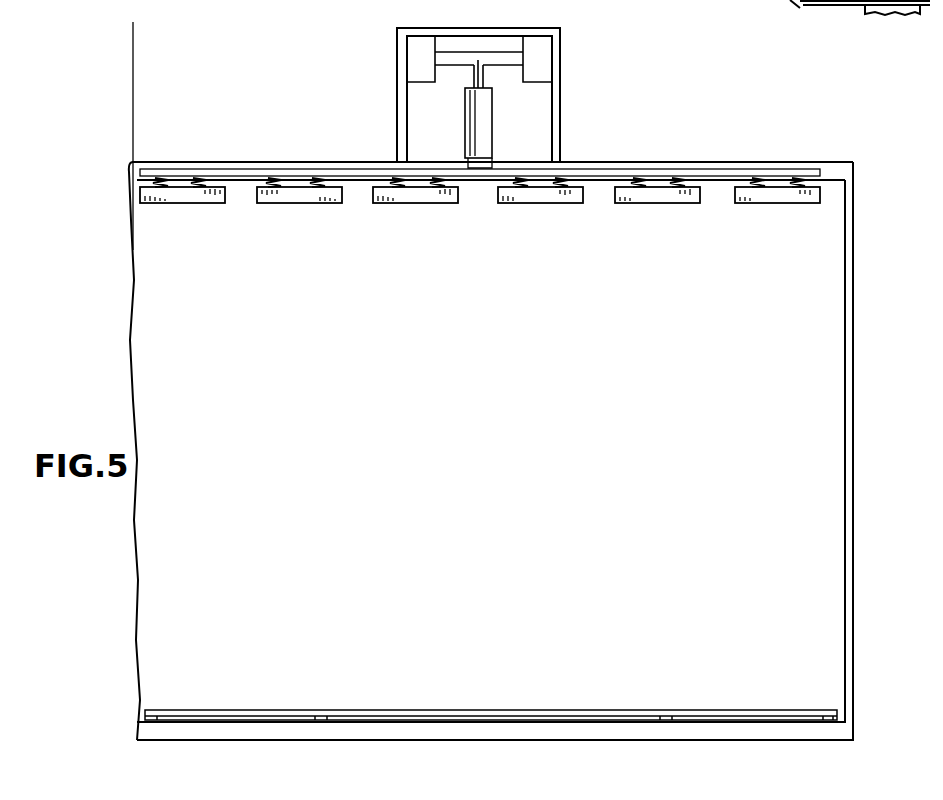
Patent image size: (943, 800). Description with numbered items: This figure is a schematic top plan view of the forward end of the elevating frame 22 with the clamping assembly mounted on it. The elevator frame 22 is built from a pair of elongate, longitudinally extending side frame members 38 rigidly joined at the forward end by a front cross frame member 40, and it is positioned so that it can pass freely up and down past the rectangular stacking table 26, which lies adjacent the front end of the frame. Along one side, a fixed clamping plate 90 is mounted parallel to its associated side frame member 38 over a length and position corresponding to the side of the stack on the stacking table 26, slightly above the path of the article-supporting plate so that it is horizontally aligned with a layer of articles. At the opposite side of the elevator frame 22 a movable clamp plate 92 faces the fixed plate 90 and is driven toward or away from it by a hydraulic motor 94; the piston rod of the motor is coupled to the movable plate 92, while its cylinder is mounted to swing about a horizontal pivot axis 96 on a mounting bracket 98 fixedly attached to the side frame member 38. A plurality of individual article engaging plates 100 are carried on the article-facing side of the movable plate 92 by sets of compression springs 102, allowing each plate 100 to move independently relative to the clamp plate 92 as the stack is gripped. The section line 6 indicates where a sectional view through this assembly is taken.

The section line 6- 6 is at (160, 31).
The elevating frame 22 is at (724, 162).
The stacking table 26 is at (828, 370).
The side frame member 38 is at (594, 171).
The front cross frame member 40 is at (853, 463).
The fixed clamping plate 90 is at (598, 711).
The movable clamp plate 92 is at (659, 172).
The hydraulic motor 94 is at (485, 127).
The horizontal pivot axis 96 is at (455, 64).
The mounting bracket 98 is at (401, 99).
The article engaging plate 100 is at (520, 204).
The compression spring 102 is at (313, 204).